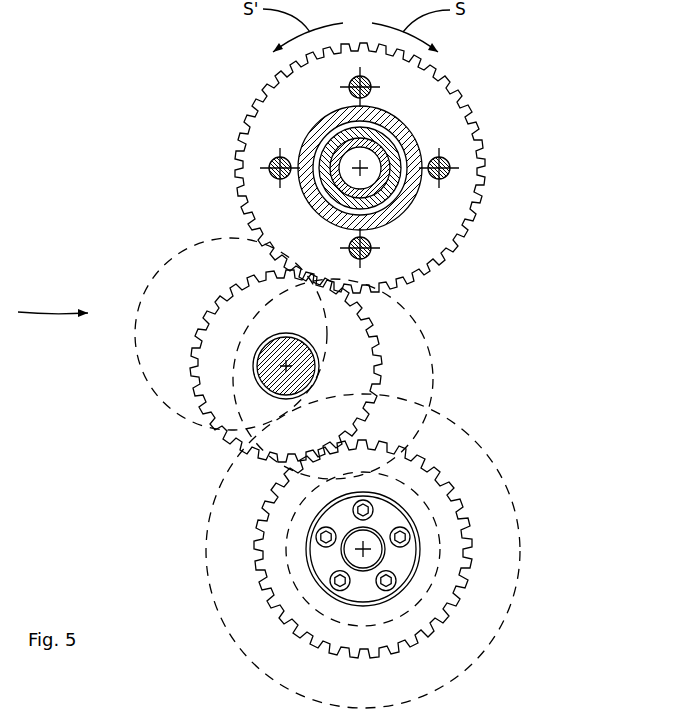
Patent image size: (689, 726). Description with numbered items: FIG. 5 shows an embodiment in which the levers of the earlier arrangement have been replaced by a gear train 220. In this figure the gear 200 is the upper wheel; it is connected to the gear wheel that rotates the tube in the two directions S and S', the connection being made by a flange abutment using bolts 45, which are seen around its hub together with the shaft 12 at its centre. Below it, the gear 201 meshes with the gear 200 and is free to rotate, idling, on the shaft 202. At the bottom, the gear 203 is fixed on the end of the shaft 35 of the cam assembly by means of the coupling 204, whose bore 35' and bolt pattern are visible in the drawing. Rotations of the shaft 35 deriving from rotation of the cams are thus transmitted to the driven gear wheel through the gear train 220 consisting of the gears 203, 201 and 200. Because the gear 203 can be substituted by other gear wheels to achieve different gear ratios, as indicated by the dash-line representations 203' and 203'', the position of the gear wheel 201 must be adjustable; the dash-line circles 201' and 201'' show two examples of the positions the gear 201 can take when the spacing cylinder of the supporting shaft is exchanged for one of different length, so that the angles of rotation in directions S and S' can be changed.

The shaft of drive gear 12 is at (362, 167).
The bolts 45 is at (268, 160).
The gear 200 is at (447, 208).
The gear 201 is at (271, 366).
The first position of gear wheel 201 201' is at (204, 327).
The second position of gear wheel 201 201'' is at (384, 379).
The shaft 202 is at (273, 380).
The gear train 220 is at (53, 336).
The gear 203 is at (379, 549).
The first alternate position of output gear 203' is at (410, 551).
The second alternate position of output gear 203'' is at (341, 562).
The coupling 204 is at (400, 567).
The shaft 35 is at (351, 613).
The shaft bore 35' is at (280, 552).